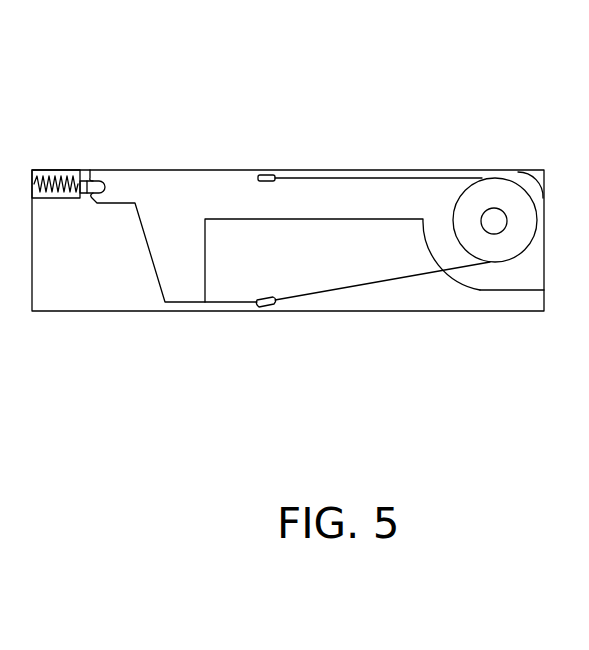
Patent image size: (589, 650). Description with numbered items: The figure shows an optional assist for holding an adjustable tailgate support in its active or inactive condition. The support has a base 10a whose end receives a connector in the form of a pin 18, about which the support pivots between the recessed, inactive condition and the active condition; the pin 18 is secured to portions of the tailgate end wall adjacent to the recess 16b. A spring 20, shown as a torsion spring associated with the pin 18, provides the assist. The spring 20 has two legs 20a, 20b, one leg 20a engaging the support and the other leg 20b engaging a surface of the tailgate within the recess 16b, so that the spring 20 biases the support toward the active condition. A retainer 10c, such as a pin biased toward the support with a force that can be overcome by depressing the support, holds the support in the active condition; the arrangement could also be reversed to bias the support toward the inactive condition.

The spring 20 is at (161, 106).
The base 10a is at (527, 176).
The retainer 10c is at (62, 167).
The recess 16b is at (112, 292).
The pin 18 is at (494, 230).
The leg 20a is at (375, 176).
The leg 20b is at (355, 297).